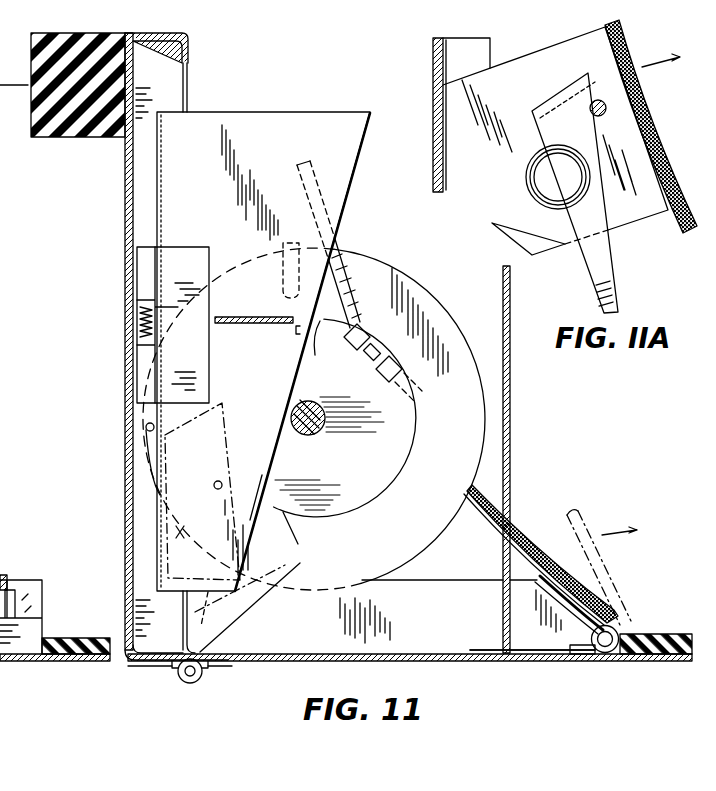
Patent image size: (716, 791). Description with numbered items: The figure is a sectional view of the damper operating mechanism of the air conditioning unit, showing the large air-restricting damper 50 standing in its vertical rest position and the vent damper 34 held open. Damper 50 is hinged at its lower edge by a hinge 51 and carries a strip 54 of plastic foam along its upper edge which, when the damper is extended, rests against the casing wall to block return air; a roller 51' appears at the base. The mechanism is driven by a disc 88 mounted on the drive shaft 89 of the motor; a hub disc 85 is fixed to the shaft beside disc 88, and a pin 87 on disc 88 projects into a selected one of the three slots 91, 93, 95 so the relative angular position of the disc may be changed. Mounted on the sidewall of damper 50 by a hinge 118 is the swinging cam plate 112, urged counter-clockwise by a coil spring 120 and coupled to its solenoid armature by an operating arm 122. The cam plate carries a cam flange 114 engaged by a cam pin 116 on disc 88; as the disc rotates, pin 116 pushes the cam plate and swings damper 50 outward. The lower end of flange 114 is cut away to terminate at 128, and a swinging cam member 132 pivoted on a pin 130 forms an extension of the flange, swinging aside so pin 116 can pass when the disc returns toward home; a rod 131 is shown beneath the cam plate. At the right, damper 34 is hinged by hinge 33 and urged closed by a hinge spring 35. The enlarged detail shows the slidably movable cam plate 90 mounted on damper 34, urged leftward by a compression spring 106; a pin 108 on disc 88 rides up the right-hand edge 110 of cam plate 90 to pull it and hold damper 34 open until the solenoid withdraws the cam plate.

In FIG. 11, the strip of plastic foam 54 is at (46, 137).
In FIG. 11, the air-restricting damper 50 is at (124, 520).
In FIG. 11, the hinge 51 is at (346, 639).
In FIG. 11, the roller 51' is at (202, 686).
In FIG. 11, the hinge 118 is at (132, 239).
In FIG. 11, the coil spring 120 is at (136, 322).
In FIG. 11, the operating arm 122 is at (256, 316).
In FIG. 11, the swinging cam plate 112 is at (276, 113).
In FIG. 11, the cam flange 114 is at (357, 157).
In FIG. 11, the pin 108 is at (291, 251).
In FIG. 11A, the pin 108 is at (598, 100).
In FIG. 11, the disc 88 is at (462, 314).
In FIG. 11, the slot 91 is at (322, 319).
In FIG. 11, the pin 87 is at (327, 345).
In FIG. 11, the drive shaft 89 is at (326, 435).
In FIG. 11, the slot 93 is at (354, 323).
In FIG. 11, the slot 95 is at (392, 372).
In FIG. 11, the hub disc 85 is at (466, 474).
In FIG. 11, the cam pin 116 is at (146, 426).
In FIG. 11, the pin 130 is at (221, 482).
In FIG. 11, the lower end of flange 128 is at (262, 474).
In FIG. 11, the swinging cam member 132 is at (248, 549).
In FIG. 11, the rod 131 is at (247, 607).
In FIG. 11, the vent door or damper 34 is at (530, 545).
In FIG. 11A, the vent door or damper 34 is at (655, 143).
In FIG. 11, the hinge 33 is at (625, 623).
In FIG. 11, the hinge spring 35 is at (578, 656).
In FIG. 11A, the right-hand edge 110 is at (600, 212).
In FIG. 11A, the compression spring 106 is at (540, 162).
In FIG. 11A, the cam plate 90 is at (586, 272).